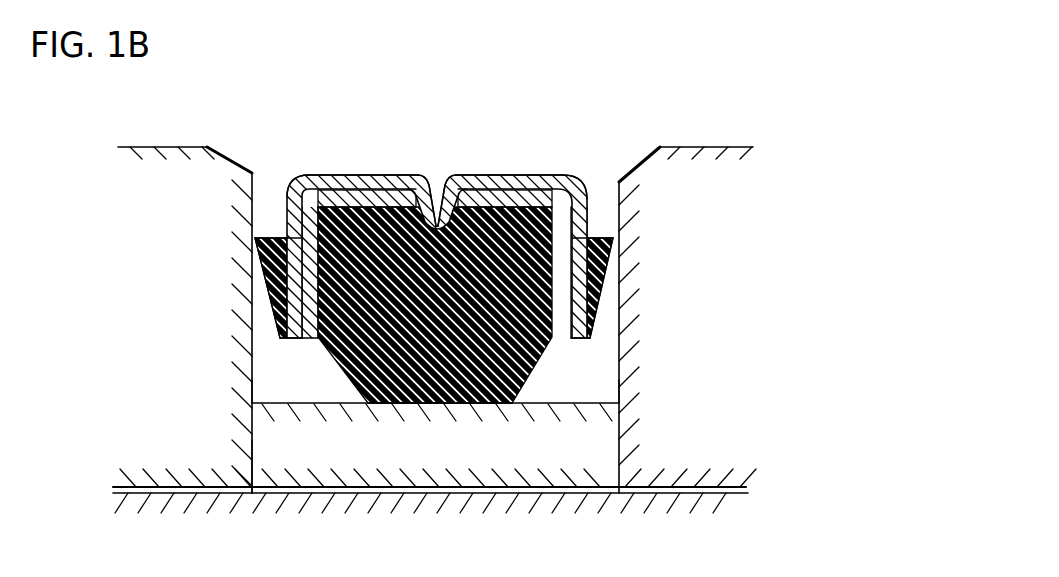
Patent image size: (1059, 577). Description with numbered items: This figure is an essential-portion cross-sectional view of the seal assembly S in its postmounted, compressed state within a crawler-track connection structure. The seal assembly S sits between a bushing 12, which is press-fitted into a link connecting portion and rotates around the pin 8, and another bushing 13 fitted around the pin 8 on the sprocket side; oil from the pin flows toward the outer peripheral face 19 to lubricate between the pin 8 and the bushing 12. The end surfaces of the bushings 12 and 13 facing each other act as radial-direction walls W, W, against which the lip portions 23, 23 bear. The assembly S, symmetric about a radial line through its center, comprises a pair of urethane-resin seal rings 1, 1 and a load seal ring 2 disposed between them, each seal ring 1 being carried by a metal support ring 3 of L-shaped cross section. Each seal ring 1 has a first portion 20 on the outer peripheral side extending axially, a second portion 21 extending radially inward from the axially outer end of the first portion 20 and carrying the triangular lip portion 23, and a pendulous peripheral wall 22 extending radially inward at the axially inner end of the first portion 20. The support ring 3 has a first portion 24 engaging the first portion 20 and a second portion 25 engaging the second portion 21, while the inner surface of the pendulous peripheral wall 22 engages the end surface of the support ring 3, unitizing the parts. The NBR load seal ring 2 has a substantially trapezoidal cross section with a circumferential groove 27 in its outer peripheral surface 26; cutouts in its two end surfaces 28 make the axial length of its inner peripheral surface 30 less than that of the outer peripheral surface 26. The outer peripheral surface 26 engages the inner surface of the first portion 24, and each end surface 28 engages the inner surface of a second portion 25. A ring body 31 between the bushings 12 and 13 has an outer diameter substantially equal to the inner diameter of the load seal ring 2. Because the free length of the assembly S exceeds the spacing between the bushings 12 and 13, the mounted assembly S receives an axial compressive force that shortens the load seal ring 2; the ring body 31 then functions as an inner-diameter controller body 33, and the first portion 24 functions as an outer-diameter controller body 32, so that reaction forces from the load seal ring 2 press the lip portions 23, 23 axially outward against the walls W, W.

The seal ring 1 is at (297, 186).
The load seal ring 2 is at (405, 408).
The support ring 3 is at (304, 342).
The pin 8 is at (330, 487).
The bushing 12 is at (186, 204).
The bushing 13 is at (716, 210).
The outer peripheral face 19 is at (280, 482).
The first portion 20 is at (385, 180).
The second portion 21 is at (283, 262).
The pendulous peripheral wall 22 is at (428, 195).
The lip portion 23 is at (268, 296).
The first portion 24 is at (333, 178).
The second portion 25 is at (305, 321).
The outer peripheral surface 26 is at (366, 188).
The circumferential groove 27 is at (437, 224).
The end surface 28 is at (300, 235).
The inner peripheral surface 30 is at (453, 408).
The ring body 31 is at (588, 440).
The outer-diameter controller body 32 is at (351, 192).
The inner-diameter controller body 33 is at (565, 468).
The seal assembly S is at (512, 192).
The radial-direction wall W is at (268, 383).